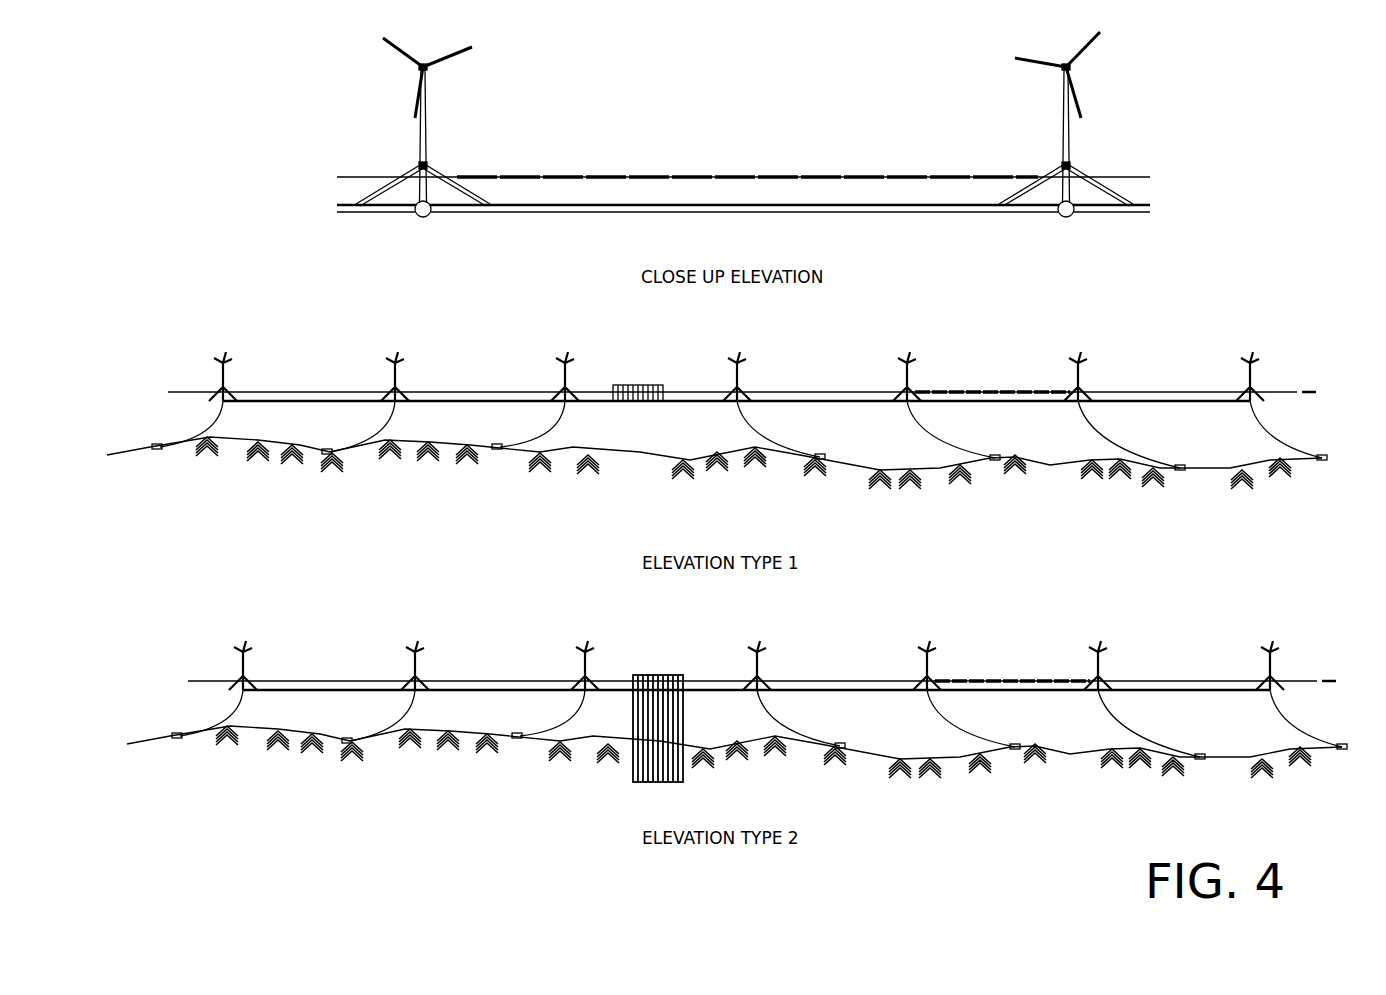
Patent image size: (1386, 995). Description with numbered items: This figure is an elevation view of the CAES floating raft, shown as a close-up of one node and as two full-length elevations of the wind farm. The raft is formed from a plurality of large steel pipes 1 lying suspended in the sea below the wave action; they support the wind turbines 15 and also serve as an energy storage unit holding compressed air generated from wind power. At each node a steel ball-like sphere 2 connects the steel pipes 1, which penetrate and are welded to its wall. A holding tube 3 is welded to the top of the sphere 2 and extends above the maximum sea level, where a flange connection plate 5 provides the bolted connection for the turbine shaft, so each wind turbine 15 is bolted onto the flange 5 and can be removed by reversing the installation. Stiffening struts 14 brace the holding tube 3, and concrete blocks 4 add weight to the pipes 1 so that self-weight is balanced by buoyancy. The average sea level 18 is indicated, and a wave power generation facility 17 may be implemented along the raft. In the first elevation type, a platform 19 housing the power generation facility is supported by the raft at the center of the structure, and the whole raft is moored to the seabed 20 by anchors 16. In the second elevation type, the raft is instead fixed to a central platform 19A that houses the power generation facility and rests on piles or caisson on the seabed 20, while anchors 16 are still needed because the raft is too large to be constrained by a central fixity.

The steel pipe 1 is at (935, 210).
The steel ball-like sphere 2 is at (1072, 217).
The holding tube 3 is at (415, 187).
The concrete block 4 is at (883, 204).
The flange connection plate 5 is at (1060, 165).
The stiffening struts 14 is at (1105, 183).
The wind turbine 15 is at (1083, 66).
The anchor 16 is at (157, 445).
The wave power generation facility 17 is at (686, 177).
The average sea level 18 is at (1163, 178).
The platform 19 is at (640, 385).
The central platform 19A is at (663, 675).
The seabed 20 is at (1265, 458).